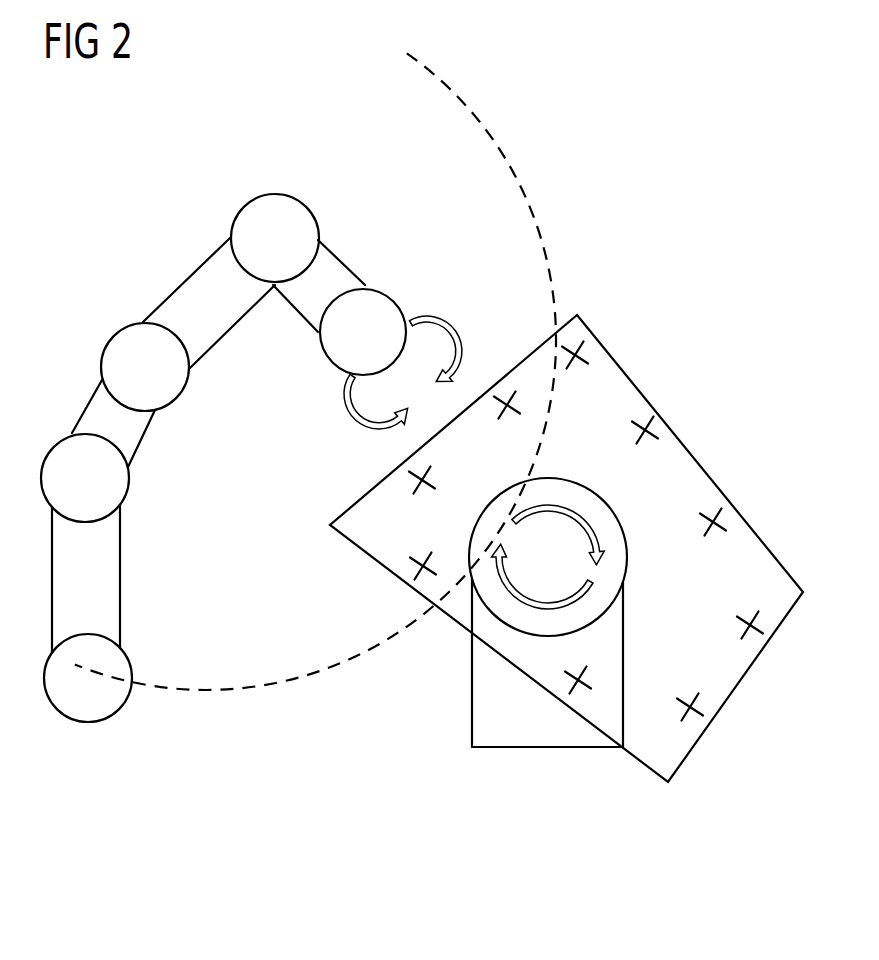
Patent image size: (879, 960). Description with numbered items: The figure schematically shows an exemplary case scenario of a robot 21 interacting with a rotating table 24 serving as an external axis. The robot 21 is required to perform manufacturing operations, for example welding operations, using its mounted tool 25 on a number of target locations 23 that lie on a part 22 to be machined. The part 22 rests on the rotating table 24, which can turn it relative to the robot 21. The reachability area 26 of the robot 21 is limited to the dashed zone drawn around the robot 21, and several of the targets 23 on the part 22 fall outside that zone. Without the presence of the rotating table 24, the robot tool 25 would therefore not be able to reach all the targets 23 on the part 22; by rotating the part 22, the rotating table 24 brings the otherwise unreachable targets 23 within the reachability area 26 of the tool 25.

The robot 21 is at (151, 752).
The part 22 is at (620, 363).
The target locations 23 is at (430, 557).
The rotating table 24 is at (470, 583).
The tool 25 is at (328, 428).
The reachability area 26 is at (486, 128).